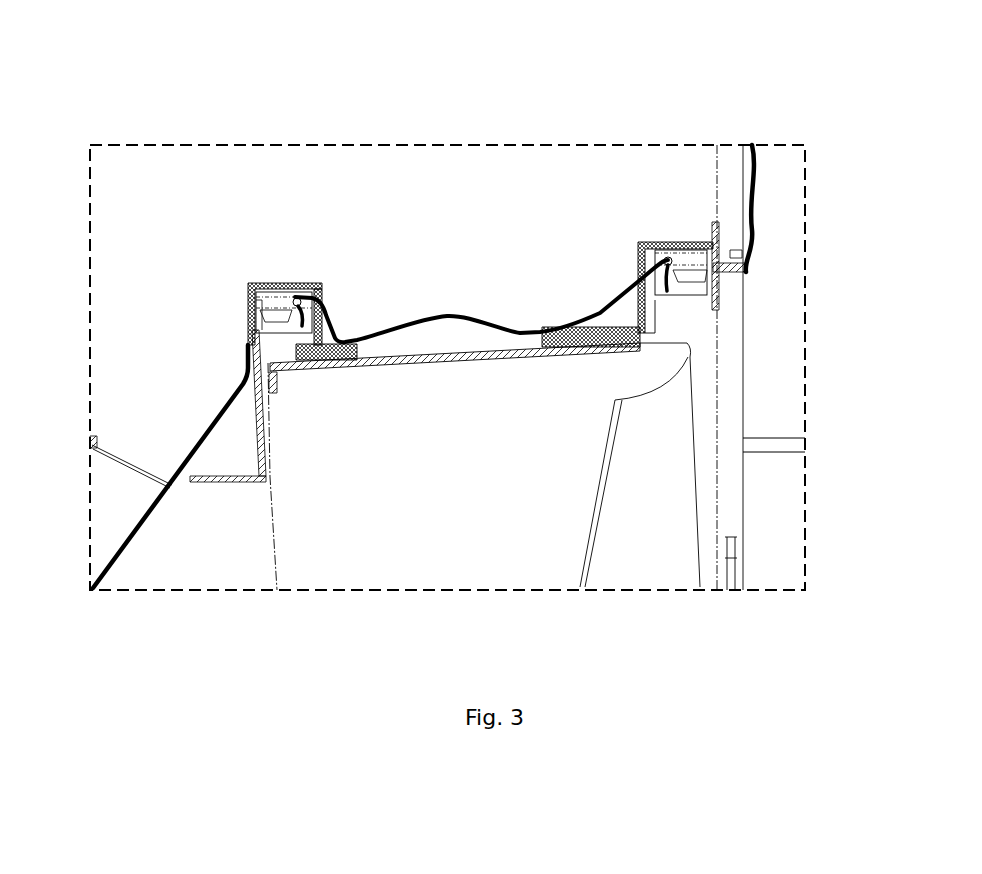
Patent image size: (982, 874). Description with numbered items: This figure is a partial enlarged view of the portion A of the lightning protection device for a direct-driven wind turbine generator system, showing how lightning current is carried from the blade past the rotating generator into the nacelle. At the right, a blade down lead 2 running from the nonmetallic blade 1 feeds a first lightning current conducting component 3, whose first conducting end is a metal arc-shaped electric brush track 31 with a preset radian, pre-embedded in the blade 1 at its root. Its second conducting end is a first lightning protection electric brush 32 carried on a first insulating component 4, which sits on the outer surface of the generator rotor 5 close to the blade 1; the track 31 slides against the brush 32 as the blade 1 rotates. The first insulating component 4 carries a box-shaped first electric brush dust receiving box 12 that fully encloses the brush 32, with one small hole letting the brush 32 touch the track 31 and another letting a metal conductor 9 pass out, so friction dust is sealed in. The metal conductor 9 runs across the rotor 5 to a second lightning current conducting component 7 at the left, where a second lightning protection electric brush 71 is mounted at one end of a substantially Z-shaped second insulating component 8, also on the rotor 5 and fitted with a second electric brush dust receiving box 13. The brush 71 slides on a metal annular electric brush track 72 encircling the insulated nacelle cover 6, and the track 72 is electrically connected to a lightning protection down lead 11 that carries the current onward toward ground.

The nonmetallic blade 1 is at (795, 328).
The blade down lead 2 is at (757, 200).
The first lightning current conducting component 3 is at (650, 50).
The metal arc-shaped electric brush track 31 is at (737, 253).
The first lightning protection electric brush 32 is at (680, 255).
The first insulating component 4 is at (640, 243).
The generator rotor 5 is at (647, 548).
The insulated nacelle cover 6 is at (107, 448).
The second lightning current conducting component 7 is at (198, 50).
The second lightning protection electric brush 71 is at (273, 303).
The metal annular electric brush track 72 is at (247, 314).
The second insulating component 8 is at (320, 281).
The metal conductor 9 is at (442, 313).
The lightning protection down lead 11 is at (218, 417).
The first electric brush dust receiving box 12 is at (640, 252).
The second electric brush dust receiving box 13 is at (323, 300).
The portion A is at (805, 145).